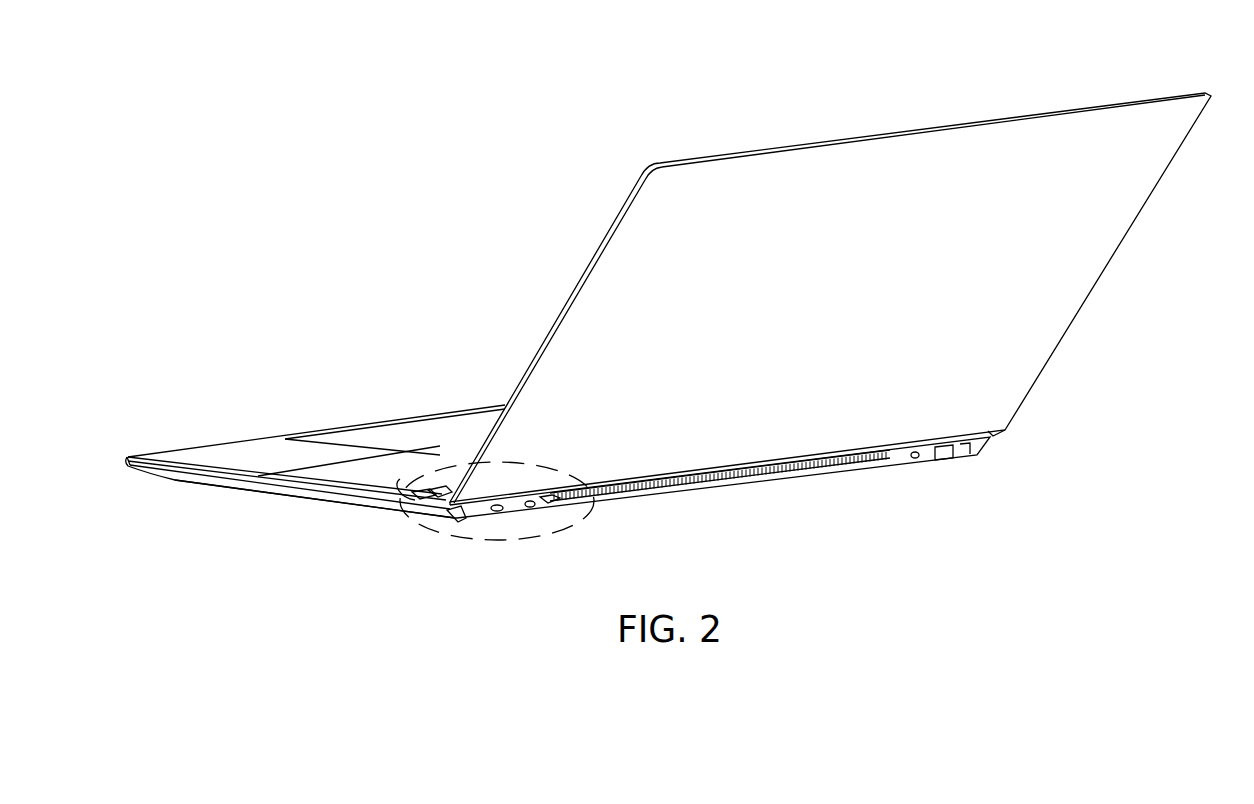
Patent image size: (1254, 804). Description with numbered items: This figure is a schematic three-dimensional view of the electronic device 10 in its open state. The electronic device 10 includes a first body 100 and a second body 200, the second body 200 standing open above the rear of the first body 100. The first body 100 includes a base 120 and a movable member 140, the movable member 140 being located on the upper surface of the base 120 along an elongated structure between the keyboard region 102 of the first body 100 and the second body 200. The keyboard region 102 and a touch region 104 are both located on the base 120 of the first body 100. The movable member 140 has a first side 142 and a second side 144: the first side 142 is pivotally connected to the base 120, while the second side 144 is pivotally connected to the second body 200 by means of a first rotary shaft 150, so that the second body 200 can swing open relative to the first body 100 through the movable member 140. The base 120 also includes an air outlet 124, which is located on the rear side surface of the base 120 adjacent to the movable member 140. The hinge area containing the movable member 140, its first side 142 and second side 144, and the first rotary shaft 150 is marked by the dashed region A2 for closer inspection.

The electronic device 10 is at (452, 204).
The first body 100 is at (176, 437).
The keyboard region 102 is at (371, 472).
The touch region 104 is at (427, 428).
The base 120 is at (228, 497).
The air outlet 124 is at (734, 488).
The movable member 140 is at (430, 502).
The first side 142 is at (398, 477).
The second side 144 is at (442, 487).
The first rotary shaft 150 is at (554, 500).
The second body 200 is at (944, 147).
The enlarged region A2 is at (440, 544).